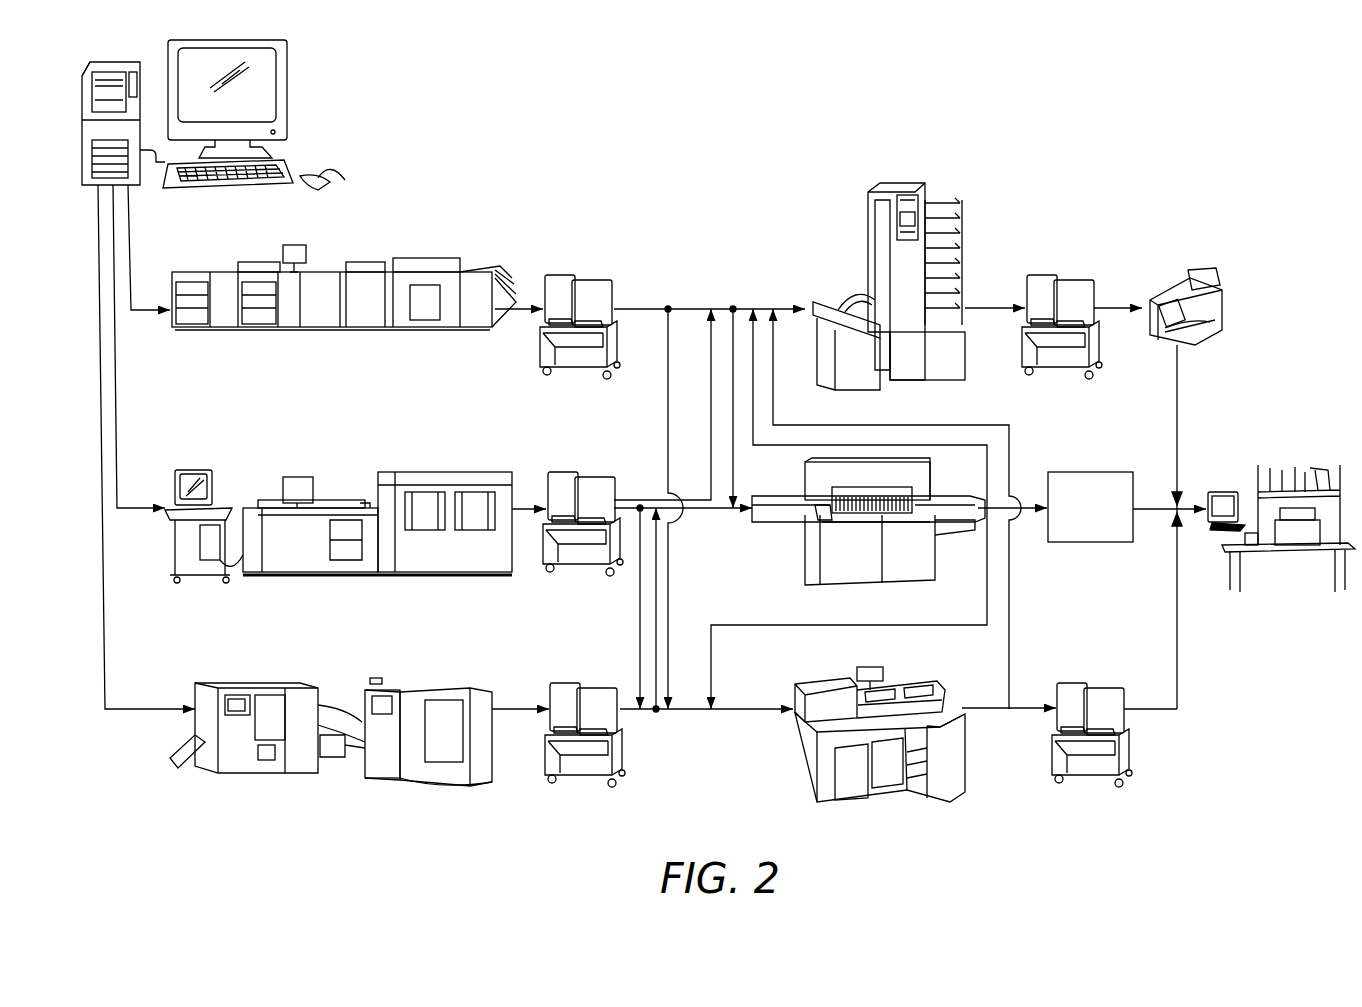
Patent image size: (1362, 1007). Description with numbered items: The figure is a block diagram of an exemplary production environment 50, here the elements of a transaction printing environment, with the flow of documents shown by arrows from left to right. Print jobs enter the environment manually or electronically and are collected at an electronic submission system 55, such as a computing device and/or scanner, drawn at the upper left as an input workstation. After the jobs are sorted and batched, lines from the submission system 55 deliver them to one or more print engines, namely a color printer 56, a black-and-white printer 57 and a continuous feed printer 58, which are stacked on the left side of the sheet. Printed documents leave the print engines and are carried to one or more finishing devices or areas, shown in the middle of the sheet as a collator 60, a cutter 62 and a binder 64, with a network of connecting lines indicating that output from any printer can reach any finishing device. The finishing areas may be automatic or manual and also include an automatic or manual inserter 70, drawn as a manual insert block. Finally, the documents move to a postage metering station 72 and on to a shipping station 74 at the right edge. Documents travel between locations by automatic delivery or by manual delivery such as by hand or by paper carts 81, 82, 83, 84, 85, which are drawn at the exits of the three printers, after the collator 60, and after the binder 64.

The production environment 50 is at (1107, 58).
The electronic submission system 55 is at (287, 98).
The color printer 56 is at (410, 270).
The black-and-white printer 57 is at (413, 473).
The continuous feed printer 58 is at (413, 690).
The collator 60 is at (868, 232).
The cutter 62 is at (805, 547).
The binder 64 is at (810, 737).
The inserter 70 is at (1092, 472).
The postage metering station 72 is at (1232, 275).
The shipping station 74 is at (1256, 495).
The paper cart 81 is at (568, 277).
The paper cart 82 is at (568, 475).
The paper cart 83 is at (600, 685).
The paper cart 84 is at (1045, 277).
The paper cart 85 is at (1077, 685).